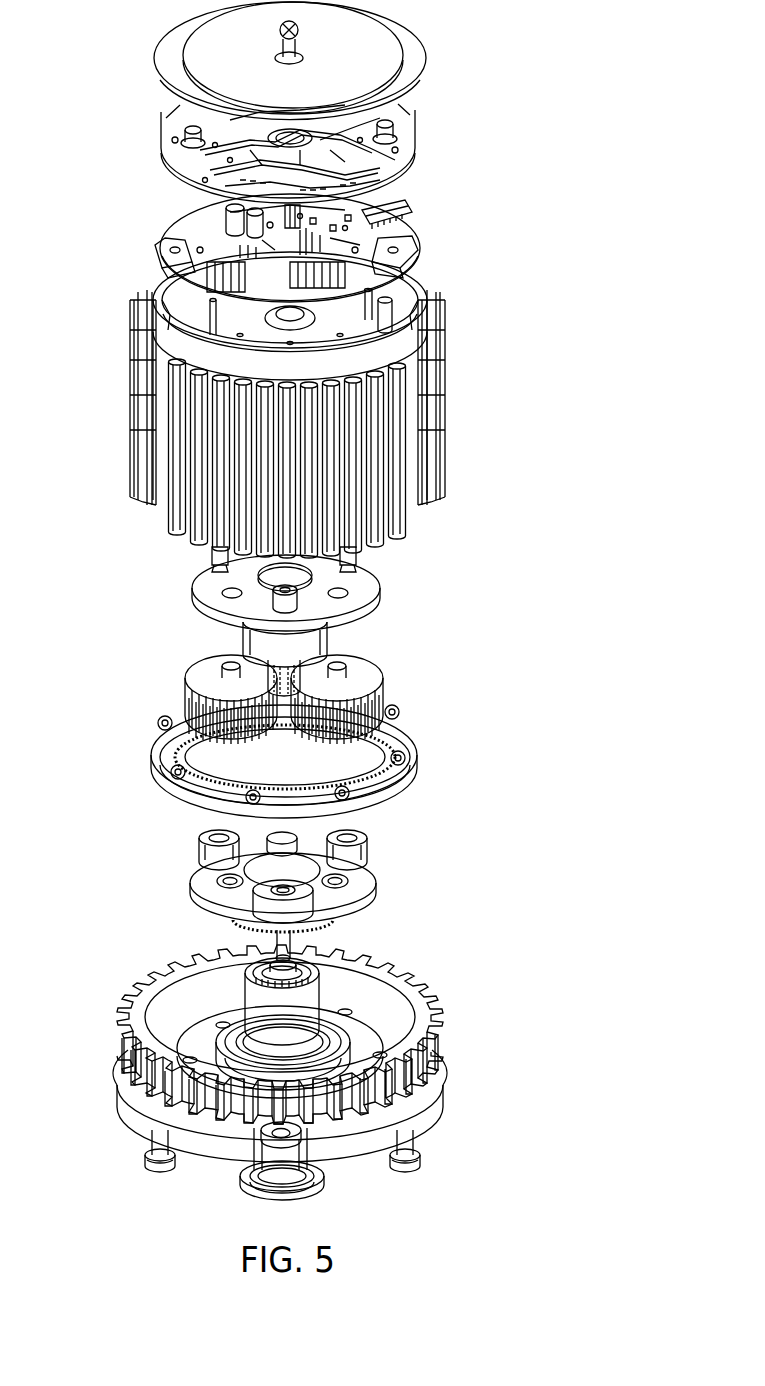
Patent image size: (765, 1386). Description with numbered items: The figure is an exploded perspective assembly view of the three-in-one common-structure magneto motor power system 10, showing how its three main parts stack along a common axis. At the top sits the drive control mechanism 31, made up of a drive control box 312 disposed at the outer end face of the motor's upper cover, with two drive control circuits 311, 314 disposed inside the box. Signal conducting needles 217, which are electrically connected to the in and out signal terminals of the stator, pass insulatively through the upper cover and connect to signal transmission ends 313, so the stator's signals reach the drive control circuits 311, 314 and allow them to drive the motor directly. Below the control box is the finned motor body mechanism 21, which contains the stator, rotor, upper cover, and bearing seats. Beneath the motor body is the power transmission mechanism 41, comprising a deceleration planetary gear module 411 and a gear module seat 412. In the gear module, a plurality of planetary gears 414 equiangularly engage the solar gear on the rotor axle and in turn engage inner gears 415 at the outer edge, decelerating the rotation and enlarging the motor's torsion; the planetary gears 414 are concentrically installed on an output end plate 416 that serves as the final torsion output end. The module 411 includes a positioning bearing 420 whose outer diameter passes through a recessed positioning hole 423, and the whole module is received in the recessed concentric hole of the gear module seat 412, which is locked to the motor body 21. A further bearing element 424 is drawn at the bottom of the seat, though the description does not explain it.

The 3-in-1 common-structure magneto motor power system 10 is at (580, 45).
The motor body mechanism 21 is at (417, 408).
The signal conducting needles 217 is at (427, 278).
The drive control mechanism 31 is at (492, 48).
The drive control circuit 311 is at (178, 242).
The drive control box 312 is at (205, 282).
The signal transmission ends 313 is at (215, 248).
The drive control circuit 314 is at (168, 133).
The power transmission mechanism 41 is at (520, 565).
The deceleration planetary gear module 411 is at (427, 598).
The gear module seat 412 is at (215, 1113).
The planetary gears 414 is at (187, 703).
The inner gears 415 is at (182, 798).
The output end plate 416 is at (197, 879).
The positioning bearing 420 is at (210, 1000).
The recessed positioning hole 423 is at (220, 985).
The lower bearing 424 is at (240, 1193).